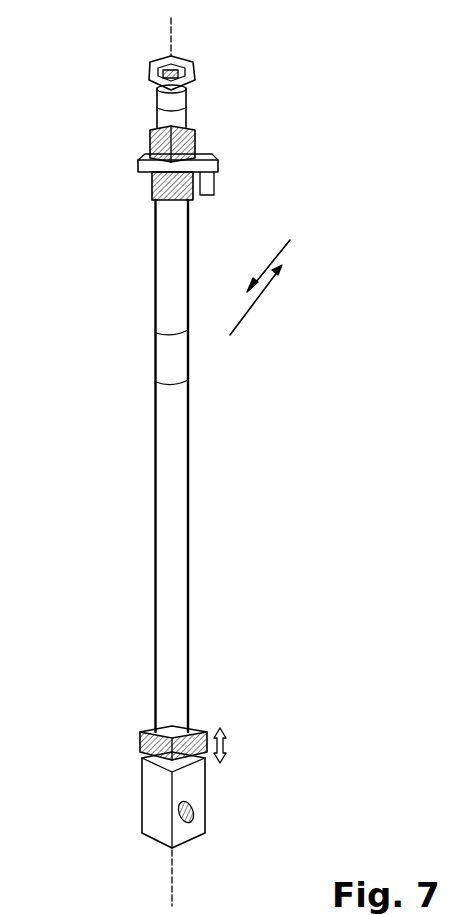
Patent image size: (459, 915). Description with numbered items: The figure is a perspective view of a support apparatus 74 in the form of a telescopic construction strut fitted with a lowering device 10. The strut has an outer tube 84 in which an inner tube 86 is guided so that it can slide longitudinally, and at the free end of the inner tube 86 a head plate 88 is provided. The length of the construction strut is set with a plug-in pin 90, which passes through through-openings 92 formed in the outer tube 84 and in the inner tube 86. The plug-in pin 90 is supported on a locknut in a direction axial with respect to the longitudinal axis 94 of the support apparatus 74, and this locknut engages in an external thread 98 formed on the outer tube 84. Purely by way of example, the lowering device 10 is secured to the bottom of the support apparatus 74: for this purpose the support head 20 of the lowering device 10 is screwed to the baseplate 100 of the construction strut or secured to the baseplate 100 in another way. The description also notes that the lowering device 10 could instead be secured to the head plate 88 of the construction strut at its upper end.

The lowering device 10 is at (142, 795).
The support head 20 is at (153, 742).
The support apparatus 74 is at (277, 271).
The outer tube 84 is at (175, 430).
The inner tube 86 is at (182, 110).
The head plate 88 is at (152, 85).
The plug-in pin 90 is at (212, 172).
The through-openings 92 is at (186, 150).
The longitudinal axis 94 is at (172, 868).
The external thread 98 is at (150, 188).
The baseplate 100 is at (202, 732).